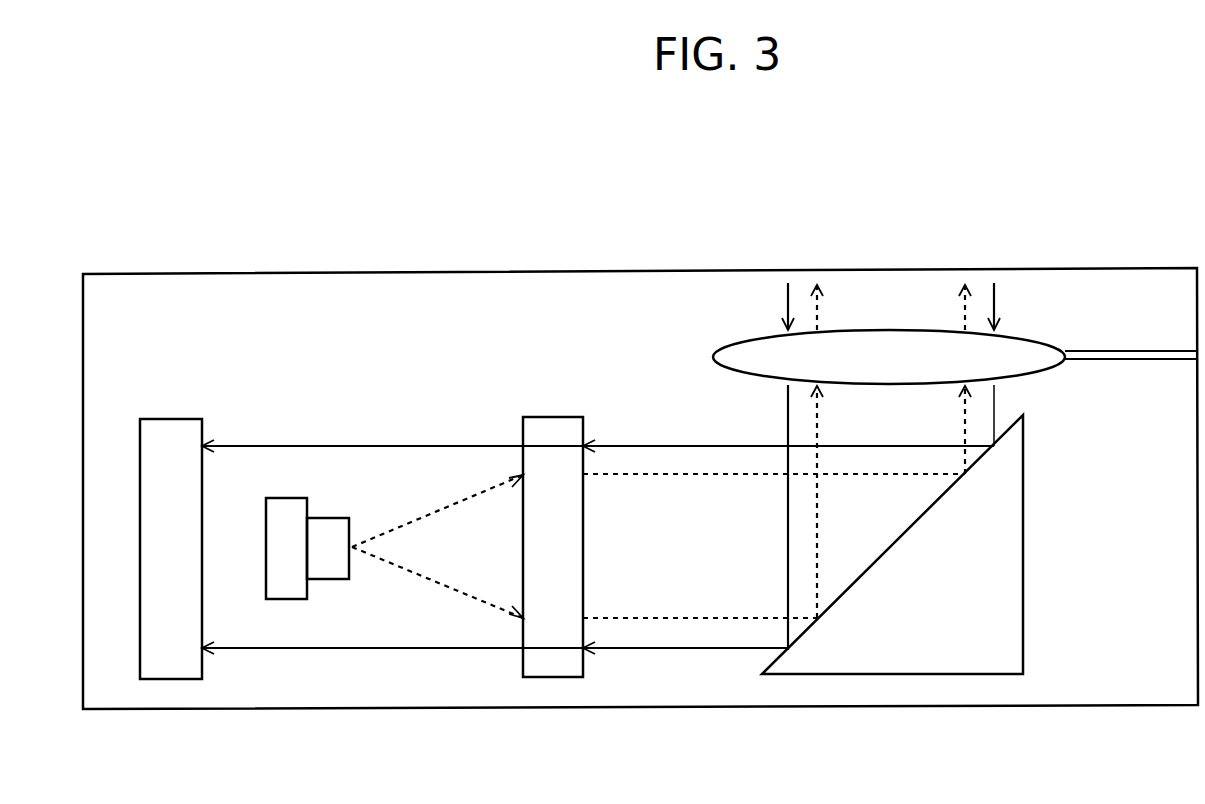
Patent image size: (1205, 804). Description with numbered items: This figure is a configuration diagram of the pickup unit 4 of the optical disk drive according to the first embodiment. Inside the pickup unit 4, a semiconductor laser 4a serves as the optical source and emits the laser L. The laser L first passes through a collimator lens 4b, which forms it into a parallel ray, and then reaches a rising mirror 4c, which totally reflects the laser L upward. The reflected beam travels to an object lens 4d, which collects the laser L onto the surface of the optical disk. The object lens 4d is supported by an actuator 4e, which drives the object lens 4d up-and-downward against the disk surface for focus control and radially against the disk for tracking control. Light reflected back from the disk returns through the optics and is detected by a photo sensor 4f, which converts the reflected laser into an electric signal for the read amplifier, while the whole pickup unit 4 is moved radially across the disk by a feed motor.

The pickup unit 4 is at (630, 233).
The semiconductor laser 4a is at (287, 599).
The collimator lens 4b is at (553, 417).
The rising mirror 4c is at (923, 674).
The object lens 4d is at (750, 338).
The actuator 4e is at (1140, 360).
The photo sensor 4f is at (170, 419).
The laser L is at (667, 618).